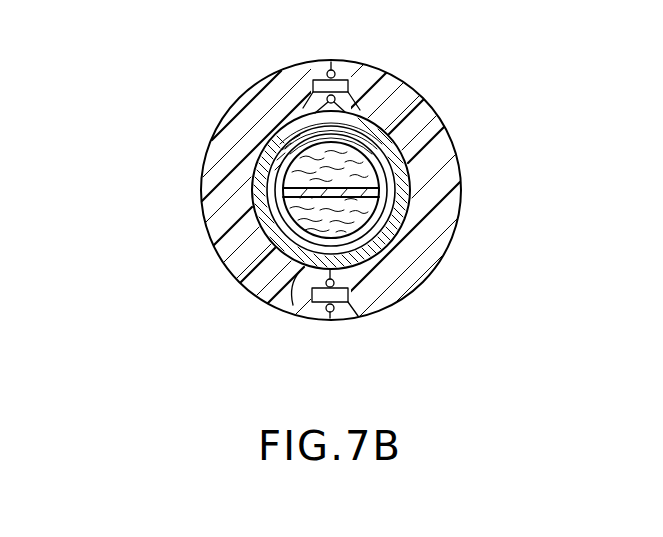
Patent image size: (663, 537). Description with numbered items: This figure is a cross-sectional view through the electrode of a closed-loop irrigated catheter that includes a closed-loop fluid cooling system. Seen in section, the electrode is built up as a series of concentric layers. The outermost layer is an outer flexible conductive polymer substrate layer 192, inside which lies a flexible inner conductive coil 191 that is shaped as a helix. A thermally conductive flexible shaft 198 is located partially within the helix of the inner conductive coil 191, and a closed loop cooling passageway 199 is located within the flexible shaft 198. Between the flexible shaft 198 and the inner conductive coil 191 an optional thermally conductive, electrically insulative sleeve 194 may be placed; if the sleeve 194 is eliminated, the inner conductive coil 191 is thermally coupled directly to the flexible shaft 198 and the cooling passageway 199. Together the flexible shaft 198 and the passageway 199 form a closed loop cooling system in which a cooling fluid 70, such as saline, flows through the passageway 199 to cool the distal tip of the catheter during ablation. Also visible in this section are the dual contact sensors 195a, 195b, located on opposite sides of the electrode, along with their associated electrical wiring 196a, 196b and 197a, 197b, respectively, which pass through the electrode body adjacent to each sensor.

The flexible inner conductive coil 191 is at (258, 195).
The outer flexible conductive polymer substrate layer 192 is at (235, 259).
The thermally conductive, electrically insulative sleeve 194 is at (308, 138).
The thermally conductive flexible shaft 198 is at (378, 122).
The closed loop cooling passageway 199 is at (353, 217).
The cooling fluid 70 is at (328, 215).
The contact sensor 195a is at (312, 80).
The contact sensor 195b is at (350, 300).
The electrical wiring 196a is at (329, 70).
The electrical wiring 196b is at (336, 100).
The electrical wiring 197a is at (350, 296).
The electrical wiring 197b is at (333, 311).